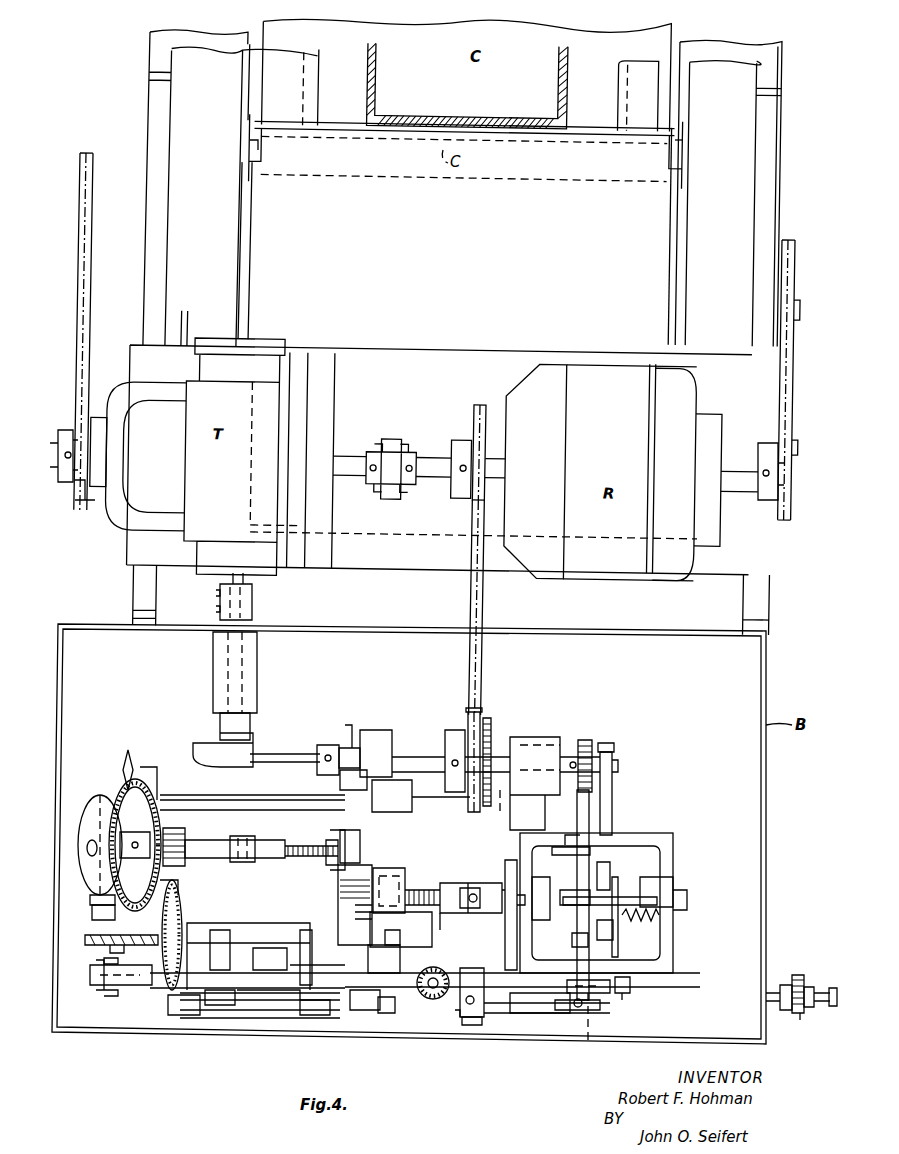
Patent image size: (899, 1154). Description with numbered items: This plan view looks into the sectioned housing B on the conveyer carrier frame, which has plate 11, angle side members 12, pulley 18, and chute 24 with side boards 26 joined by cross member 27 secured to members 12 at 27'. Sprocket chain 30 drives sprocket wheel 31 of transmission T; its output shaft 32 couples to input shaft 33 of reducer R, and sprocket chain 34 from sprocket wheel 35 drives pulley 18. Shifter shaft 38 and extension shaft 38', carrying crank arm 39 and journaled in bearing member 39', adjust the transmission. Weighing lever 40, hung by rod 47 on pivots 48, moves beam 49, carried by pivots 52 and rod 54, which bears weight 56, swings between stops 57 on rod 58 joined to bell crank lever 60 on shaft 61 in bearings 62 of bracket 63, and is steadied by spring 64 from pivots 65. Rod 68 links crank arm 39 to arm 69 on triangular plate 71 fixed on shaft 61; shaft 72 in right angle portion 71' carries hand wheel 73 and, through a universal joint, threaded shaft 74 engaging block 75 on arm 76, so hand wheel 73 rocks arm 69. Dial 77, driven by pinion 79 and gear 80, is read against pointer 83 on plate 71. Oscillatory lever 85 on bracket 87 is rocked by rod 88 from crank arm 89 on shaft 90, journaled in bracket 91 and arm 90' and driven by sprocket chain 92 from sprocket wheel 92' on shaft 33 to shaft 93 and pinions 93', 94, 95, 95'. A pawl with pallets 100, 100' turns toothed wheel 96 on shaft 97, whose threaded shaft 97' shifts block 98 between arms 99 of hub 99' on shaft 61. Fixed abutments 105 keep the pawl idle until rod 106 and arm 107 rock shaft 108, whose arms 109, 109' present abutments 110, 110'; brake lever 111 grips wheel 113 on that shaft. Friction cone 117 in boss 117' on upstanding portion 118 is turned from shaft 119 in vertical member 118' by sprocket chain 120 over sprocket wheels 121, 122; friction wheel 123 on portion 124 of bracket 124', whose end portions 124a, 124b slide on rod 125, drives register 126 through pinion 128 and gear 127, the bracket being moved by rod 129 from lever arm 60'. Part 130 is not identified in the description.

The plate 11 is at (150, 32).
The side members 12 is at (241, 162).
The pulley 18 is at (255, 240).
The chute 24 is at (375, 70).
The side boards 26 is at (290, 105).
The cross member 27 is at (466, 160).
The flanged end connection 27' is at (494, 164).
The sprocket chain 30 is at (90, 335).
The sprocket wheel 31 is at (90, 505).
The output shaft 32 is at (350, 458).
The input shaft 33 is at (438, 458).
The sprocket chain 34 is at (797, 405).
The sprocket wheel 35 is at (786, 497).
The shifter shaft 38 is at (255, 596).
The shaft 38' is at (257, 672).
The crank arm 39 is at (210, 737).
The bearing member 39' is at (208, 702).
The weighing lever 40 is at (810, 987).
The rod 47 is at (800, 1015).
The knife edge pivots 48 is at (796, 975).
The beam 49 is at (495, 1003).
The knife edge pivots 52 is at (95, 978).
The rod 54 is at (210, 1005).
The counterbalancing weight 56 is at (540, 1013).
The stops 57 is at (472, 972).
The rod 58 is at (472, 1025).
The bell crank lever 60 is at (427, 998).
The lever arm 60' is at (386, 1031).
The shaft 61 is at (400, 938).
The bearings 62 is at (400, 805).
The bracket 63 is at (446, 883).
The spring 64 is at (466, 1002).
The pivots 65 is at (460, 1017).
The rod 68 is at (275, 754).
The arm 69 is at (328, 775).
The plate 71 is at (315, 792).
The right angle portion 71' is at (252, 793).
The shaft 72 is at (228, 846).
The hand manipulating wheel 73 is at (97, 818).
The shaft 74 is at (305, 858).
The block 75 is at (330, 865).
The arm 76 is at (330, 845).
The dial 77 is at (118, 792).
The pinion 79 is at (185, 845).
The gear 80 is at (178, 890).
The pointer 83 is at (126, 760).
The lever 85 is at (618, 935).
The bracket 87 is at (673, 853).
The rod 88 is at (612, 810).
The crank arm 89 is at (614, 750).
The shaft 90 is at (451, 756).
The arm 90' is at (574, 727).
The bracket 91 is at (380, 730).
The sprocket chain 92 is at (498, 607).
The sprocket wheel 92' is at (463, 436).
The shaft 93 is at (535, 768).
The pinion 93' is at (640, 771).
The pinion 94 is at (592, 745).
The pinion 95 is at (497, 812).
The pinion 95' is at (504, 744).
The toothed wheel 96 is at (572, 940).
The shaft 97 is at (504, 909).
The shaft 97' is at (472, 919).
The block 98 is at (340, 883).
The arms 99 is at (400, 882).
The sleeve 99' is at (413, 890).
The pallet 100 is at (628, 914).
The pallet 100' is at (688, 886).
The fixed abutments 105 is at (598, 845).
The rod 106 is at (630, 990).
The arm 107 is at (596, 1016).
The rock shaft 108 is at (517, 900).
The arm 109 is at (560, 831).
The arm 109' is at (599, 1006).
The abutment 110 is at (548, 891).
The abutment 110' is at (649, 980).
The lever 111 is at (657, 900).
The wheel 113 is at (565, 905).
The friction cone 117 is at (234, 935).
The boss 117' is at (292, 942).
The upstanding portion 118 is at (260, 1027).
The vertical member 118' is at (319, 1015).
The shaft 119 is at (253, 965).
The sprocket chain 120 is at (356, 914).
The sprocket wheel 121 is at (347, 725).
The sprocket wheel 122 is at (372, 1010).
The friction wheel 123 is at (197, 945).
The projecting portion 124 is at (233, 995).
The bracket 124' is at (214, 882).
The right angle end portion 124a is at (297, 968).
The end portion 124b is at (160, 790).
The rod 125 is at (273, 995).
The register 126 is at (100, 905).
The gear 127 is at (100, 945).
The pinion 128 is at (150, 980).
The rod 129 is at (258, 1018).
The block 130 is at (185, 1015).